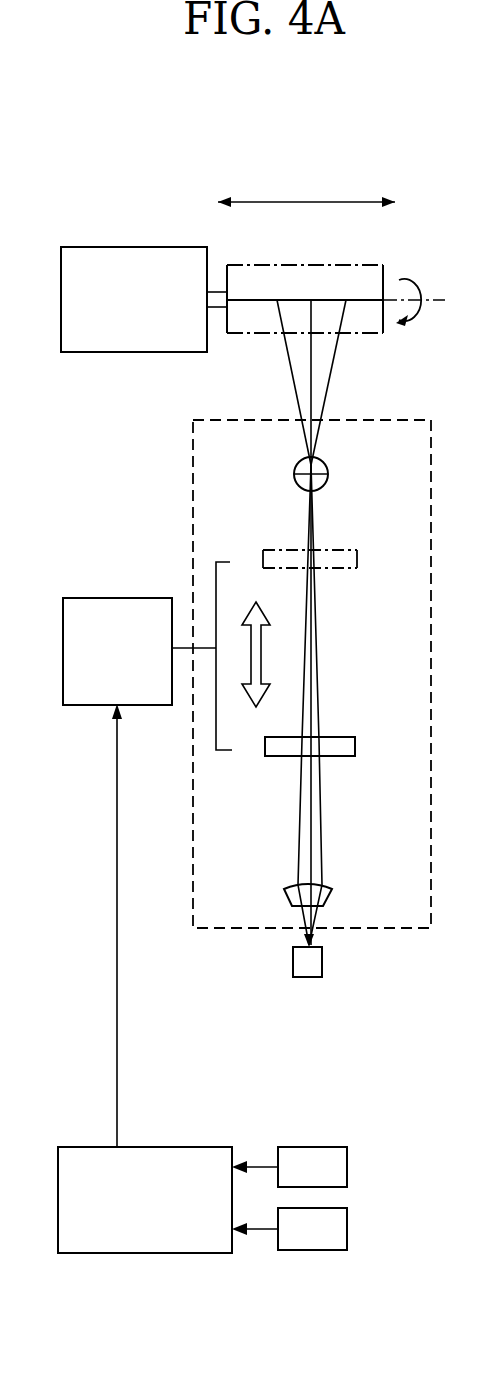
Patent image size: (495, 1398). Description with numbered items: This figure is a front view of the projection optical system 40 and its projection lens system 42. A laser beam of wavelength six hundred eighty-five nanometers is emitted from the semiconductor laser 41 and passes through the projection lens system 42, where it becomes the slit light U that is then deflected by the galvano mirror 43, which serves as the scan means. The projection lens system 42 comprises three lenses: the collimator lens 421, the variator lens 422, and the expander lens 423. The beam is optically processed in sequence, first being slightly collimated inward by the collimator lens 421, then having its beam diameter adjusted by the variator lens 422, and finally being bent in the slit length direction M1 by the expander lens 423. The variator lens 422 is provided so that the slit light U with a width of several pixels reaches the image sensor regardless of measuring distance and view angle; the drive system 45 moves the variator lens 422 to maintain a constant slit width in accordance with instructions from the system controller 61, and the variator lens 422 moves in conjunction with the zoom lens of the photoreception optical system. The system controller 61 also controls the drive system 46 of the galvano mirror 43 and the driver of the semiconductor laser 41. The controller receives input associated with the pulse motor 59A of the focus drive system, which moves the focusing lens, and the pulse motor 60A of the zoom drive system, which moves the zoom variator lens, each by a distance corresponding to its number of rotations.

The projection optical system 40 is at (230, 134).
The semiconductor laser 41 is at (322, 962).
The projection lens system 42 is at (413, 420).
The collimator lens 421 is at (331, 902).
The variator lens 422 is at (343, 756).
The expander lens 423 is at (294, 474).
The galvano mirror 43 is at (380, 265).
The drive system 45 is at (125, 598).
The drive system 46 is at (135, 247).
The system controller 61 is at (153, 1147).
The pulse motor 59A is at (347, 1160).
The pulse motor 60A is at (347, 1223).
The slit length direction M1 is at (306, 185).
The slit light U is at (292, 377).